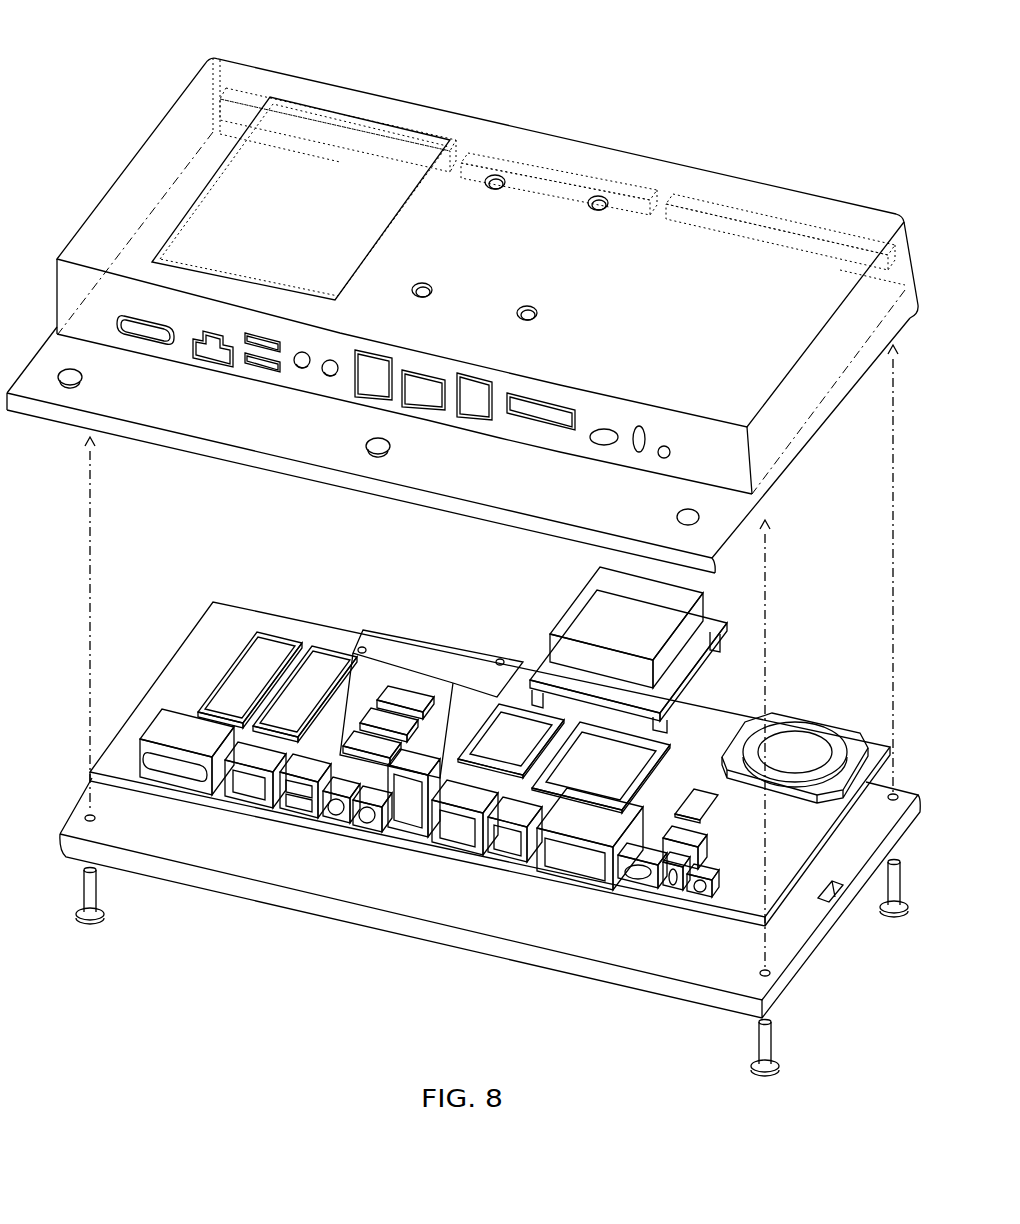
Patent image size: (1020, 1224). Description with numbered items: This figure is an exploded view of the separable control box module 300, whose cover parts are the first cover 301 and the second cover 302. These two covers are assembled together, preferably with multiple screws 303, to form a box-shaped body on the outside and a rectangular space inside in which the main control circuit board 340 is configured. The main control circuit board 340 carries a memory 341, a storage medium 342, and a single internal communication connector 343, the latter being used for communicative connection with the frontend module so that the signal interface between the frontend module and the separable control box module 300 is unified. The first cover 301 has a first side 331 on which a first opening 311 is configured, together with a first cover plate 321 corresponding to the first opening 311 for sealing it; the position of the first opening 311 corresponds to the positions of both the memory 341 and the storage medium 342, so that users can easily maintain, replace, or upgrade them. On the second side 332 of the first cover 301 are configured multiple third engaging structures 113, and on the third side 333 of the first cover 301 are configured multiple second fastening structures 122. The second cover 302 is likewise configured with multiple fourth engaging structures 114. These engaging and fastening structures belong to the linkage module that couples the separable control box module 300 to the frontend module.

The separable control box module 300 is at (641, 27).
The first cover 301 is at (530, 130).
The first opening 311 is at (168, 237).
The first cover plate 321 is at (307, 221).
The first side 331 is at (565, 255).
The second side 332 is at (803, 213).
The third engaging structures 113 is at (685, 202).
The third side 333 is at (458, 445).
The second fastening structures 122 is at (80, 385).
The main control circuit board 340 is at (196, 627).
The memory 341 is at (404, 692).
The storage medium 342 is at (318, 662).
The single internal communication connector 343 is at (693, 842).
The second cover 302 is at (185, 886).
The screws 303 is at (774, 1046).
The fourth engaging structures 114 is at (832, 900).